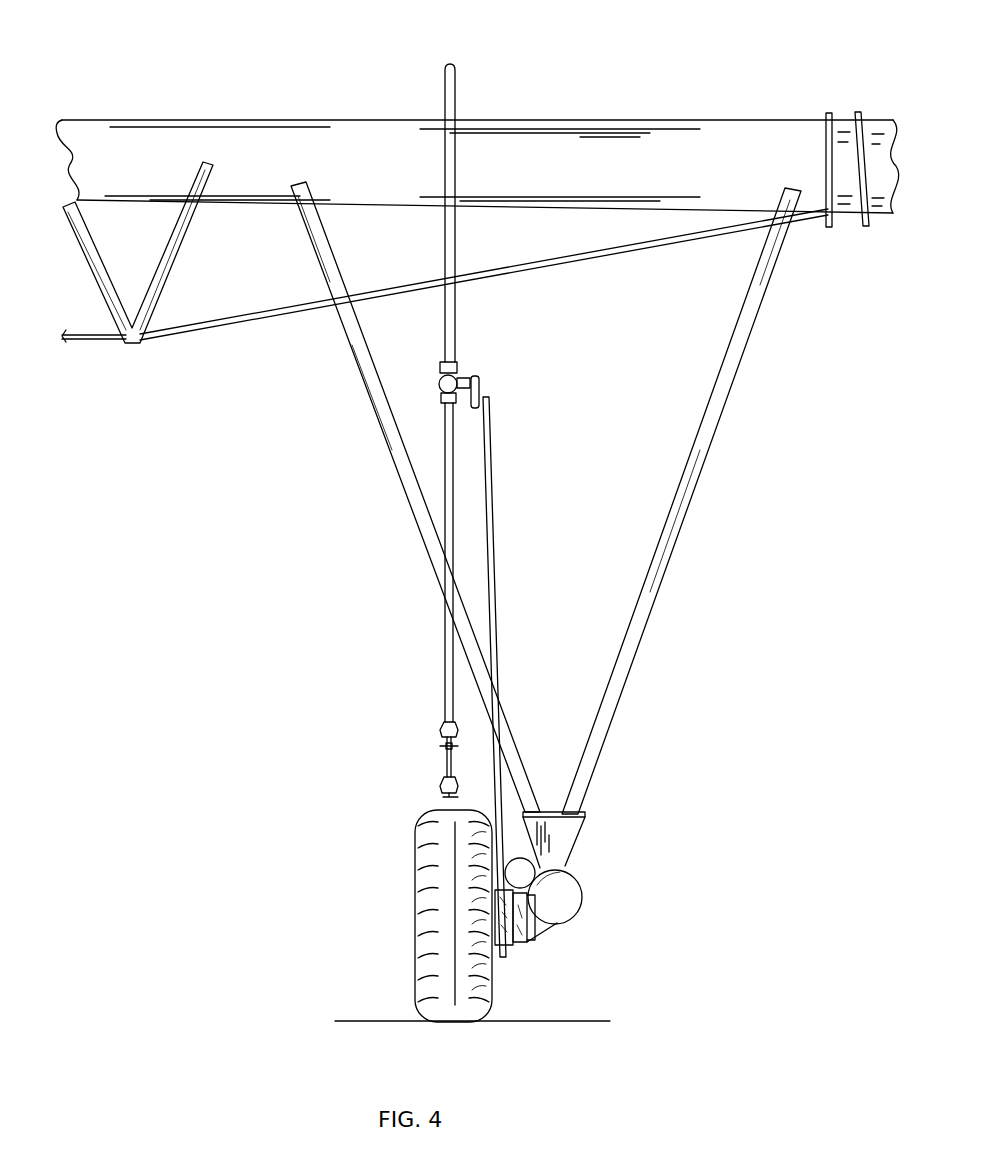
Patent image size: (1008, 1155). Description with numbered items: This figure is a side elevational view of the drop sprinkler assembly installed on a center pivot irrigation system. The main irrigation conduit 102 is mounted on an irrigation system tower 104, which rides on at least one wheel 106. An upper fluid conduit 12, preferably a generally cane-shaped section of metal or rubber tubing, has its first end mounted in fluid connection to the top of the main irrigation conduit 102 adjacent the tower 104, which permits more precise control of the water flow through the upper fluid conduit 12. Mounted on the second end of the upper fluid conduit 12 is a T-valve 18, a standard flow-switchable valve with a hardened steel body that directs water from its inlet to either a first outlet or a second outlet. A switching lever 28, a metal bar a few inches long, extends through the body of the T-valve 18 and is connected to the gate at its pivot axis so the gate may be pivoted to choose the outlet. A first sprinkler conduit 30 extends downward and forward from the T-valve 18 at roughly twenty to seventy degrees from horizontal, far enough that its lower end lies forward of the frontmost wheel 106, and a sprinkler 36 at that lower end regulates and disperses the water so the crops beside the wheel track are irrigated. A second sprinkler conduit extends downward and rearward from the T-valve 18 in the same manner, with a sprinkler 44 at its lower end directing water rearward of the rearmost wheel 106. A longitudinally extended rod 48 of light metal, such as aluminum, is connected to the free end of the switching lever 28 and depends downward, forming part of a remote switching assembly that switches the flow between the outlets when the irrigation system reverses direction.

The upper fluid conduit 12 is at (460, 92).
The T-valve 18 is at (437, 373).
The switching lever 28 is at (480, 390).
The first sprinkler conduit 30 is at (445, 647).
The sprinkler 36 is at (434, 725).
The sprinkler 44 is at (440, 782).
The longitudinally extended rod 48 is at (506, 596).
The main irrigation conduit 102 is at (620, 125).
The irrigation system tower 104 is at (650, 619).
The wheel 106 is at (415, 935).